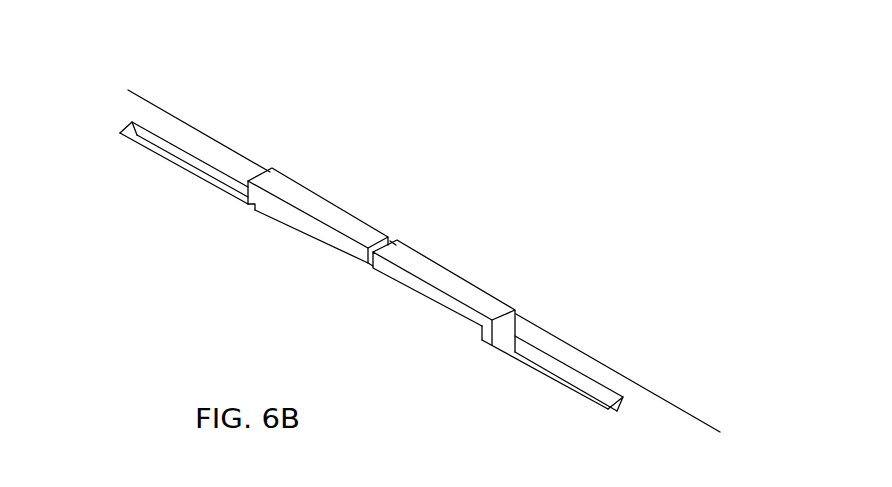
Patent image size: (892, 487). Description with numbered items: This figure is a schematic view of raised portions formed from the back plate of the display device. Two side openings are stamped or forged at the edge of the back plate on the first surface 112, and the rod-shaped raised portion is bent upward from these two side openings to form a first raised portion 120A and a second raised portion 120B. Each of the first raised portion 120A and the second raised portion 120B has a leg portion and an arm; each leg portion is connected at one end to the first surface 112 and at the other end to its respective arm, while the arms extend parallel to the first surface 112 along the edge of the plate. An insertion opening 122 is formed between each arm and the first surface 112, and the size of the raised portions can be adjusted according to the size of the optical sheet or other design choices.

The first surface 112 is at (202, 205).
The insertion opening 122 is at (280, 233).
The first raised portion 120A is at (346, 80).
The second raised portion 120B is at (594, 229).